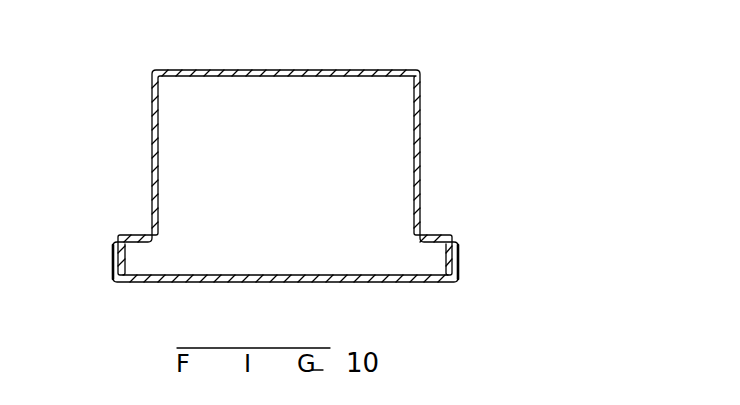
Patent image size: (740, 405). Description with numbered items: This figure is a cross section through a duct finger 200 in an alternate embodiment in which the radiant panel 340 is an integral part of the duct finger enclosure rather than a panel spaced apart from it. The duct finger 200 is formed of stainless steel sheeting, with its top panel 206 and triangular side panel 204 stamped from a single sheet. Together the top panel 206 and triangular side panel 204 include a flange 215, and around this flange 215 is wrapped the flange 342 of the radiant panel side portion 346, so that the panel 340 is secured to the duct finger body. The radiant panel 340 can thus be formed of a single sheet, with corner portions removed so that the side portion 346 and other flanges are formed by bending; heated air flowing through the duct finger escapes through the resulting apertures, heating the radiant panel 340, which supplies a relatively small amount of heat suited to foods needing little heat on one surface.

The duct finger 200 is at (436, 69).
The triangular side panel 204 is at (421, 152).
The top panel 206 is at (295, 70).
The flange 215 is at (450, 258).
The radiant panel 340 is at (367, 283).
The flange 342 is at (435, 235).
The radiant panel side portion 346 is at (113, 255).